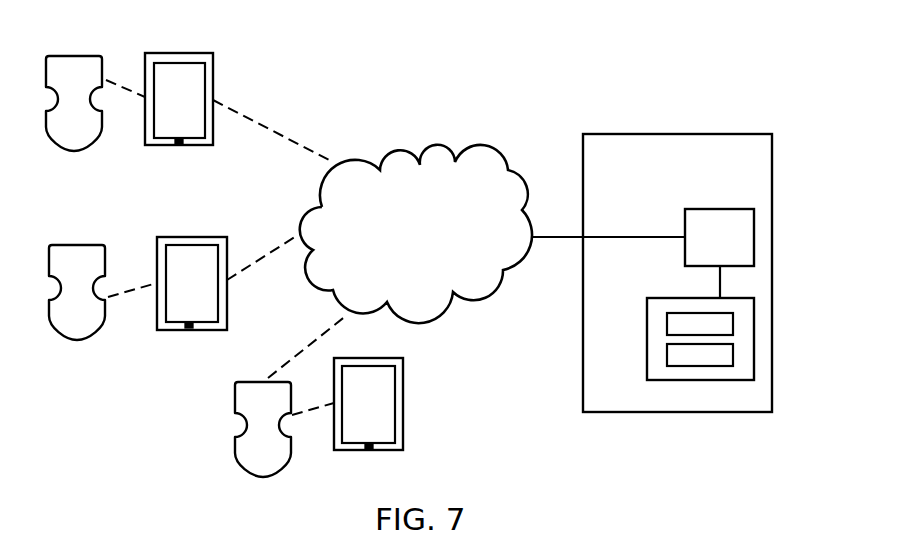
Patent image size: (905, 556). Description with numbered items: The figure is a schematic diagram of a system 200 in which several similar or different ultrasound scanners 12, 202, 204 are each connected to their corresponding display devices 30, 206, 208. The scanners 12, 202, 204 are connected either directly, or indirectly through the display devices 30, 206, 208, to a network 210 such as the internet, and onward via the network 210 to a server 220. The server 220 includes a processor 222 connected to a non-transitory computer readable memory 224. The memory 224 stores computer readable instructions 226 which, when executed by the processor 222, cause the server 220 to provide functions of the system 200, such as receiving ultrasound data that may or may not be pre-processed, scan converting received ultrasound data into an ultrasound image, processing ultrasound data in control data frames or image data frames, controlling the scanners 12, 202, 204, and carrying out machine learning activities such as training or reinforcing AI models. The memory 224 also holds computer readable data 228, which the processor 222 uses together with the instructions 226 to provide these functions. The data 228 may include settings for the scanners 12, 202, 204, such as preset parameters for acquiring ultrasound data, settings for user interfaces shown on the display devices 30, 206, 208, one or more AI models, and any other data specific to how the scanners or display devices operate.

The system 200 is at (714, 72).
The scanner 12 is at (60, 149).
The display device 30 is at (163, 147).
The scanner 202 is at (55, 327).
The scanner 204 is at (243, 467).
The display device 206 is at (178, 329).
The display device 208 is at (353, 450).
The network 210 is at (485, 145).
The server 220 is at (773, 153).
The processor 222 is at (755, 235).
The non-transitory computer readable memory 224 is at (755, 338).
The computer readable instructions 226 is at (667, 324).
The computer readable data 228 is at (667, 355).